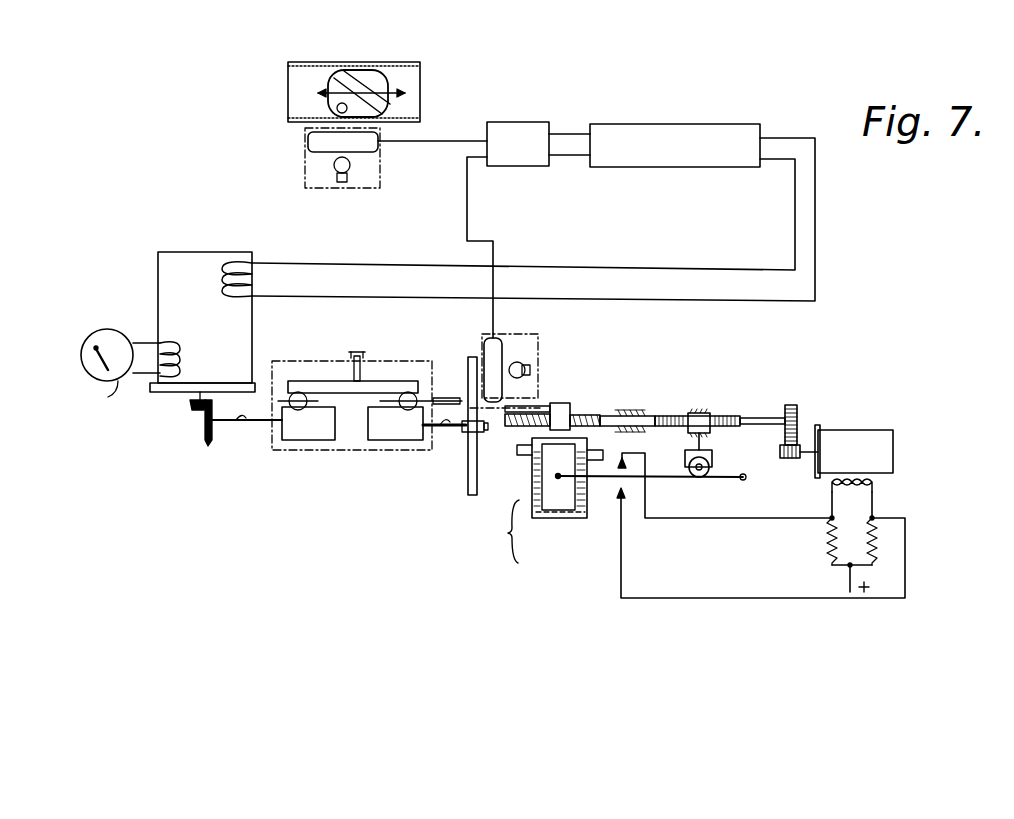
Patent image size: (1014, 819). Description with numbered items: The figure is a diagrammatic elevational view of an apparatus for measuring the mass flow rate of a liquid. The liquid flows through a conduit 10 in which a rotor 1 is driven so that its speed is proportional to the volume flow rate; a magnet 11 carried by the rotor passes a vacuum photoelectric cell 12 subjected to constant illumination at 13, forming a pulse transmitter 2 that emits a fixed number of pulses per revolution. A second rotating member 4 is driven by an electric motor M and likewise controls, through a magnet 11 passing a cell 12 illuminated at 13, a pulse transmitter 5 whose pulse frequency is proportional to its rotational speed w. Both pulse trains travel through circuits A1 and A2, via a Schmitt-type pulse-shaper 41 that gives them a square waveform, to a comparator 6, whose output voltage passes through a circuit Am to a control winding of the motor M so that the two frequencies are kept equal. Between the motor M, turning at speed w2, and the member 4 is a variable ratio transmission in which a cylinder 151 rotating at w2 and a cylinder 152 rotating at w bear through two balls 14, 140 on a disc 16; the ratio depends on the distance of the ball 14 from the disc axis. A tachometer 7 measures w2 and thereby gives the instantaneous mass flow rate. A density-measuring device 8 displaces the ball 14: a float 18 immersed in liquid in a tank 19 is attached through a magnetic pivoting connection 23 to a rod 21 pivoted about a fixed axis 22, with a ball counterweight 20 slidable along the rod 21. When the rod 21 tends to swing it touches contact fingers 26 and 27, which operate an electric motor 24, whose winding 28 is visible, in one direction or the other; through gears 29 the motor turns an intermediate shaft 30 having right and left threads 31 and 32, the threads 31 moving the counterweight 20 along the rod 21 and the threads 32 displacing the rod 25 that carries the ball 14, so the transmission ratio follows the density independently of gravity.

The rotor 1 is at (369, 70).
The conduit 10 is at (407, 62).
The magnet 11 is at (336, 108).
The vacuum photoelectric cell 12 is at (366, 147).
The constant illumination 13 is at (334, 165).
The pulse transmitter 2 is at (355, 188).
The circuit A1 is at (436, 141).
The pulse-shaper 41 is at (512, 128).
The comparator 6 is at (648, 124).
The circuit A2 is at (467, 204).
The circuit Am is at (575, 298).
The electric motor M is at (186, 268).
The tachometer 7 is at (117, 336).
The rotational speed of motor shaft w2 is at (247, 408).
The disc 16 is at (368, 389).
The ball 140 is at (298, 392).
The ball 14 is at (408, 392).
The cylinder 151 is at (313, 437).
The cylinder 152 is at (402, 437).
The rotational speed of member w is at (444, 432).
The rotating member 4 is at (468, 466).
The pulse transmitter 5 is at (536, 386).
The rod 25 is at (544, 408).
The threads 32 is at (580, 413).
The threads 31 is at (721, 416).
The intermediate shaft 30 is at (757, 418).
The gears 29 is at (792, 442).
The electric motor 24 is at (845, 432).
The winding 28 is at (882, 488).
The contact finger 26 is at (618, 466).
The contact finger 27 is at (617, 488).
The rod 21 is at (658, 478).
The fixed axis 22 is at (748, 478).
The counterweight 20 is at (711, 471).
The float 18 is at (573, 500).
The tank 19 is at (587, 511).
The pivoting connection 23 is at (558, 479).
The device 8 is at (505, 531).